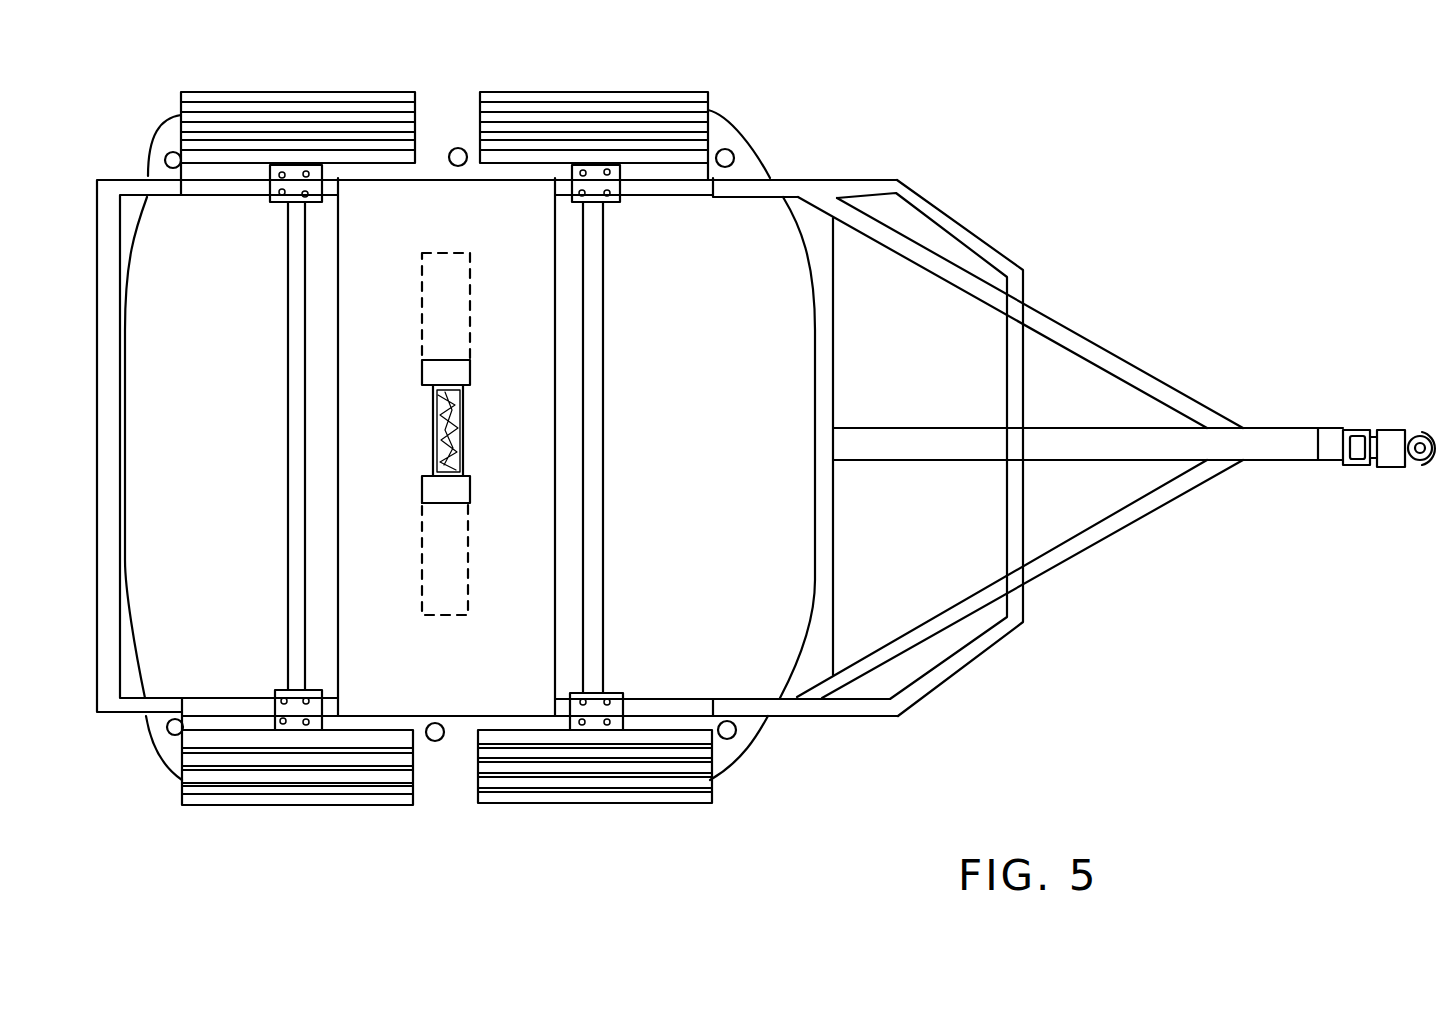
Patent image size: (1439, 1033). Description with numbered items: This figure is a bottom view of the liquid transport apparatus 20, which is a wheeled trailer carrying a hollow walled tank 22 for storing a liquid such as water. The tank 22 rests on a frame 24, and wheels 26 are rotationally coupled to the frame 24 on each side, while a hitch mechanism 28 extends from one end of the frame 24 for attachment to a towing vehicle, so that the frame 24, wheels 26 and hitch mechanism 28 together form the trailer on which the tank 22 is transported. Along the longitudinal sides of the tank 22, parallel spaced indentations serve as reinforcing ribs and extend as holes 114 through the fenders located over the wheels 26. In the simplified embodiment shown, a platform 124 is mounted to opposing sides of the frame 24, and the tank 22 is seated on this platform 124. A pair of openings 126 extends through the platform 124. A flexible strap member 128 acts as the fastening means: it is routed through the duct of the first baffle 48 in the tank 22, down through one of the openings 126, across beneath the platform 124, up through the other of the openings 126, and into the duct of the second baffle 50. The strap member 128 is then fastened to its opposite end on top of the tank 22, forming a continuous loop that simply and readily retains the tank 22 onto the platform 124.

The liquid transport apparatus 20 is at (560, 557).
The hollow walled tank 22 is at (745, 125).
The frame 24 is at (808, 190).
The wheels 26 is at (267, 92).
The hitch mechanism 28 is at (1388, 430).
The first baffle 48 is at (470, 318).
The second baffle 50 is at (468, 550).
The holes 114 is at (456, 148).
The platform 124 is at (440, 681).
The openings 126 is at (457, 370).
The flexible strap member 128 is at (462, 420).